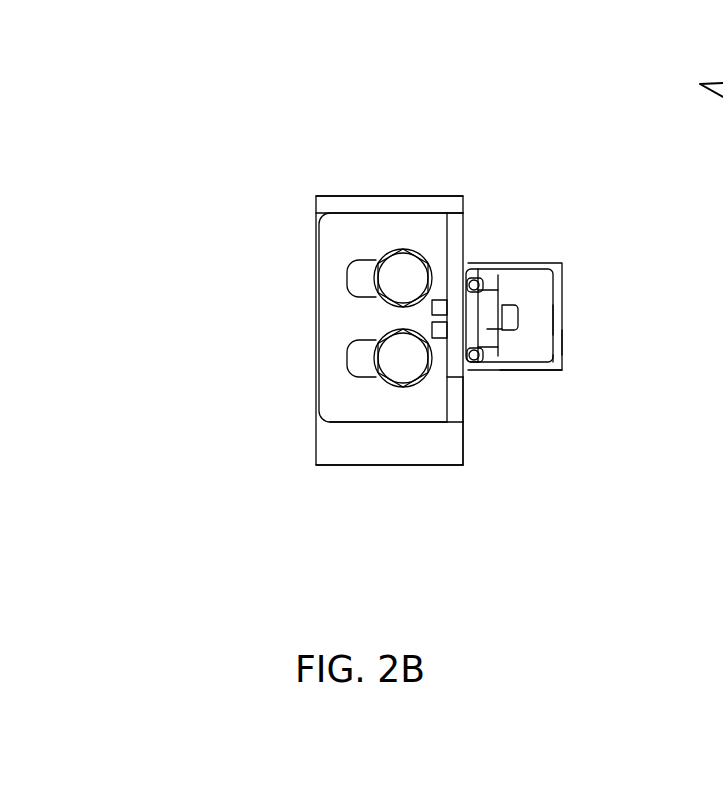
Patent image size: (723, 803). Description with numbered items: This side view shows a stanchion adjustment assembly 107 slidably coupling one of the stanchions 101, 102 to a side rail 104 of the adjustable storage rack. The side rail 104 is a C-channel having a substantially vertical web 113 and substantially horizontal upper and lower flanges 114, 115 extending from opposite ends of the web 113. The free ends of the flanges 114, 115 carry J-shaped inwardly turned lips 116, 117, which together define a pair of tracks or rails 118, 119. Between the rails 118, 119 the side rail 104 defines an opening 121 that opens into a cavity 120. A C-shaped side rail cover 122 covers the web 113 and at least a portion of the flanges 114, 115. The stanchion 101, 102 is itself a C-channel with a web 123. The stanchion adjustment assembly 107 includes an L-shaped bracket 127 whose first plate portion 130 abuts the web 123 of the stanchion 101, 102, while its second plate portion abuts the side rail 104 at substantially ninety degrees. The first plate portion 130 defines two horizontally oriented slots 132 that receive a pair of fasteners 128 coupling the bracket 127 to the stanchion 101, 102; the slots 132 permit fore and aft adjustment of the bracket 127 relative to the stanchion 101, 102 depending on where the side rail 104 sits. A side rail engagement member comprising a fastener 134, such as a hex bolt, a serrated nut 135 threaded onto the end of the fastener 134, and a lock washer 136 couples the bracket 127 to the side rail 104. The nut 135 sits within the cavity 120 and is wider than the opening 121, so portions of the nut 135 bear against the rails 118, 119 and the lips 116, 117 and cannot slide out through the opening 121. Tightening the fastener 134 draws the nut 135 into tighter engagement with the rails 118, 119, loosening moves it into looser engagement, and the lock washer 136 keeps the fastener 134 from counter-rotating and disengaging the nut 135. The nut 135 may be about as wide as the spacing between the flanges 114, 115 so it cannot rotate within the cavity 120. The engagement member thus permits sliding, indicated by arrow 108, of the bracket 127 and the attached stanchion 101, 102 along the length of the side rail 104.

The stanchion 101 is at (359, 357).
The stanchion 102 is at (337, 445).
The stanchion adjustment assembly 107 is at (326, 397).
The arrow 108 is at (561, 285).
The side rail 104 is at (562, 268).
The web 113 is at (553, 328).
The upper flange 114 is at (500, 291).
The lower flange 115 is at (533, 371).
The inwardly turned lip 116 is at (474, 300).
The inwardly turned lip 117 is at (477, 362).
The rail 118 is at (537, 273).
The rail 119 is at (562, 356).
The cavity 120 is at (543, 303).
The opening 121 is at (455, 283).
The side rail cover 122 is at (566, 342).
The web 123 is at (370, 447).
The bracket 127 is at (358, 235).
The fasteners 128 is at (355, 352).
The first plate portion 130 is at (348, 407).
The slots 132 is at (397, 273).
The fastener 134 is at (437, 340).
The nut 135 is at (525, 320).
The lock washer 136 is at (437, 340).